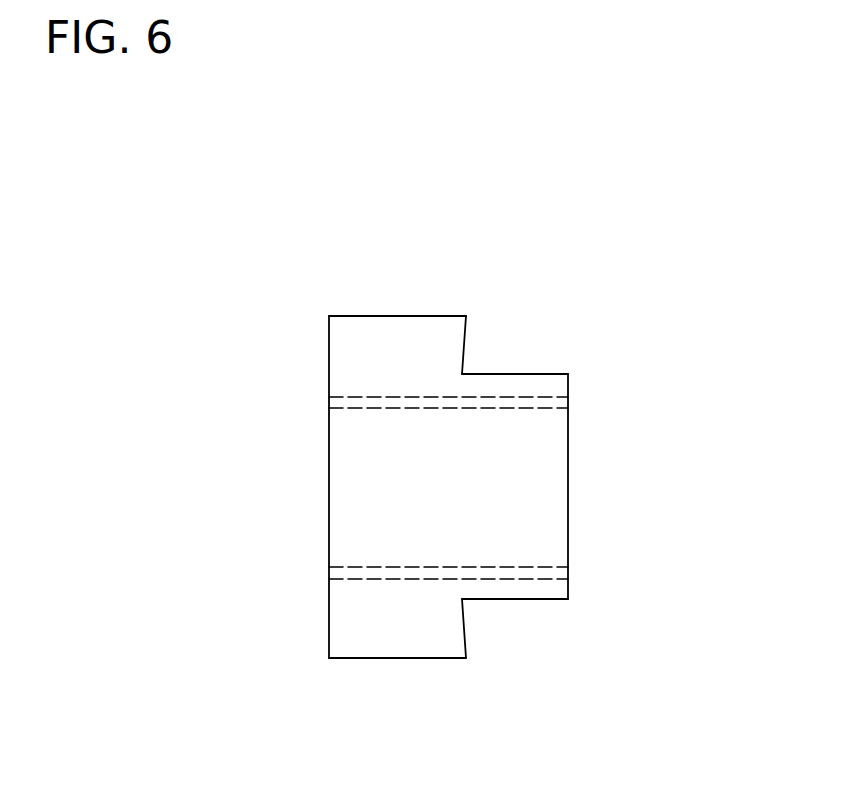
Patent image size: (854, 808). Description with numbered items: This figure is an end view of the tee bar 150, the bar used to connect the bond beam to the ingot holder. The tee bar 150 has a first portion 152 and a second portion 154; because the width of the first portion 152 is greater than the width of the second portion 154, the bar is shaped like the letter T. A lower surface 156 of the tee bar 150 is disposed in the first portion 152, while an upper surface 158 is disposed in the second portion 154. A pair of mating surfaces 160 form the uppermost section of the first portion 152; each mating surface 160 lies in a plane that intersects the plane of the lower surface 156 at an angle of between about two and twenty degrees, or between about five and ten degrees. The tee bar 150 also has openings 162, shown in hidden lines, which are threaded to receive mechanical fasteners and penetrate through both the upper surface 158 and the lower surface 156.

The tee bar 150 is at (456, 244).
The first portion 152 is at (400, 623).
The second portion 154 is at (524, 587).
The lower surface 156 is at (329, 610).
The upper surface 158 is at (568, 584).
The mating surfaces 160 is at (465, 332).
The openings 162 is at (488, 465).